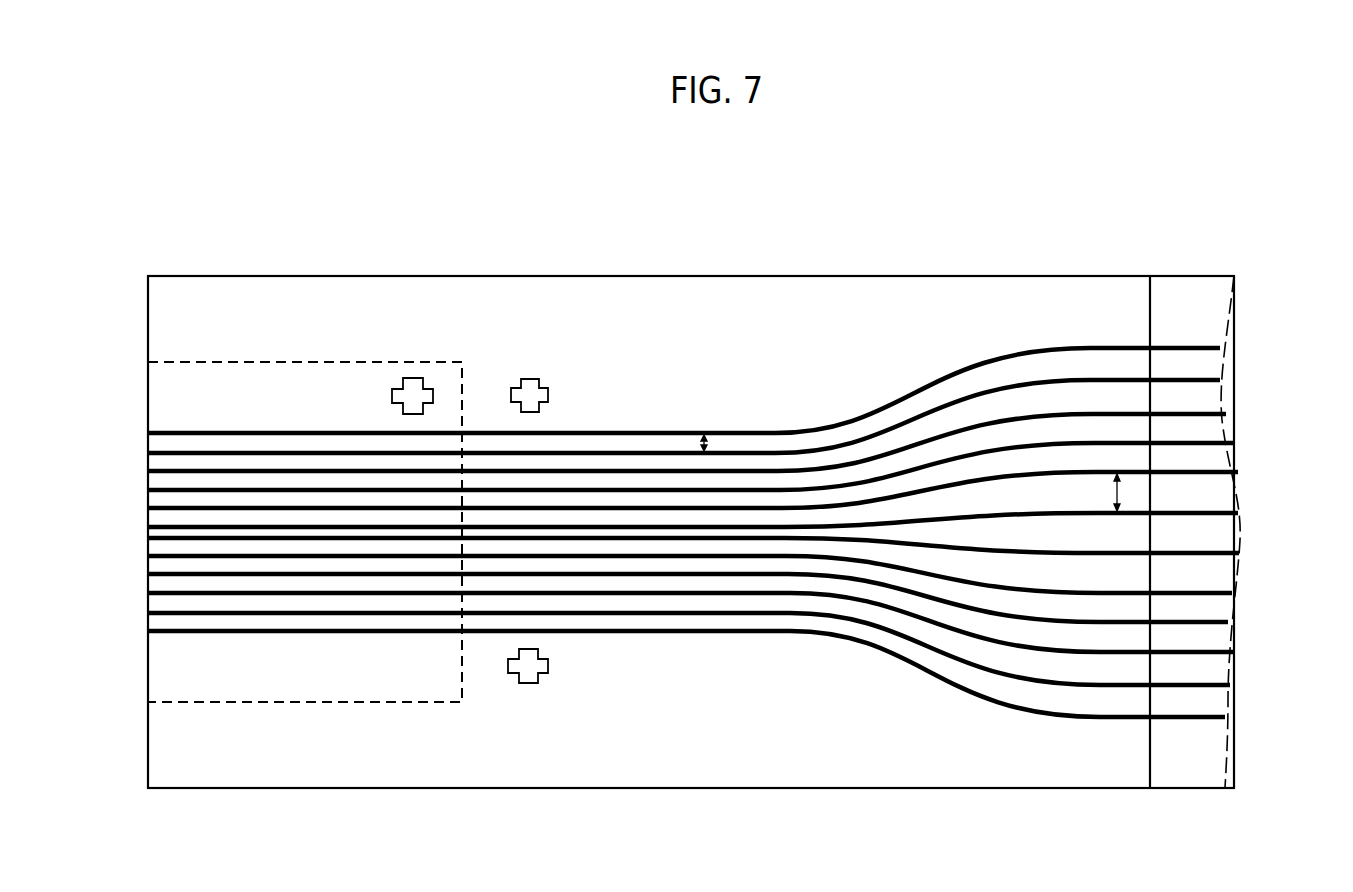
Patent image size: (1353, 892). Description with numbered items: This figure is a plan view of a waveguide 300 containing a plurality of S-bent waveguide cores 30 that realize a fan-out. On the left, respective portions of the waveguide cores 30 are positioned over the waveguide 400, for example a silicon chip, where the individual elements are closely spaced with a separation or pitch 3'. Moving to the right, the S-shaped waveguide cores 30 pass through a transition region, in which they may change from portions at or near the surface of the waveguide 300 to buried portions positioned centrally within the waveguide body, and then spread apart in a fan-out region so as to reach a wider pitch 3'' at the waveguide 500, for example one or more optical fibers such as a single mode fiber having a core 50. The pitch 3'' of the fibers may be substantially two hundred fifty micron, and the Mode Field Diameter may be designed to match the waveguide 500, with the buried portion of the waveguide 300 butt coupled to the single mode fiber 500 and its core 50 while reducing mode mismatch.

The waveguide 300 is at (863, 295).
The S-bent core 30 is at (1117, 440).
The pitch 3' is at (718, 404).
The pitch 3'' is at (1081, 492).
The waveguide 400 is at (192, 406).
The single mode fiber 500 is at (1218, 425).
The core 50 is at (1240, 470).